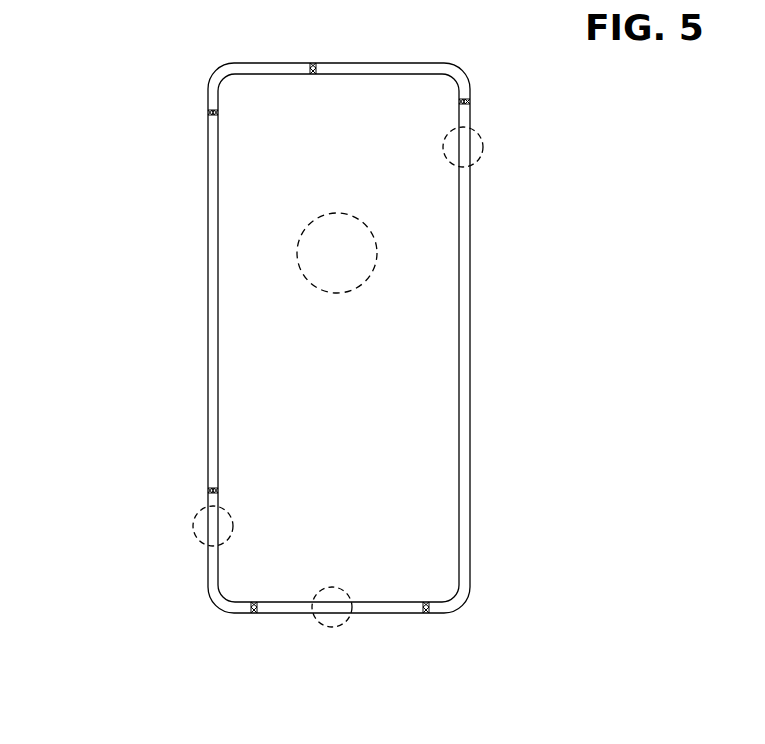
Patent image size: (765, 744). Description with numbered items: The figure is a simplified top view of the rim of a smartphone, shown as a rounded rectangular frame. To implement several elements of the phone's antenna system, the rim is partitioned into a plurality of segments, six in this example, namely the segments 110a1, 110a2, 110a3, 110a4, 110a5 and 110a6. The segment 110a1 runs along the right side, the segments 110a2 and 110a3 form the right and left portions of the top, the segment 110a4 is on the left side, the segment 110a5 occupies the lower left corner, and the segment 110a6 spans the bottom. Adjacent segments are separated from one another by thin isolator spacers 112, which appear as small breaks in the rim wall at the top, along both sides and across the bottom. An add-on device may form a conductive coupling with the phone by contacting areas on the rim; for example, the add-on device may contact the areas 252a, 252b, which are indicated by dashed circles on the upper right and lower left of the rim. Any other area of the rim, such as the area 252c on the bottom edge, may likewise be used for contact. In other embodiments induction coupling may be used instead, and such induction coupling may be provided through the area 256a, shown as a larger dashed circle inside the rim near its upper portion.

The rim segment 110a1 is at (471, 370).
The rim segment 110a2 is at (370, 60).
The rim segment 110a3 is at (264, 62).
The rim segment 110a4 is at (207, 340).
The rim segment 110a5 is at (207, 568).
The rim segment 110a6 is at (384, 617).
The isolator spacer 112 is at (457, 101).
The contact area 252a is at (478, 163).
The contact area 252b is at (190, 526).
The contact area 252c is at (322, 626).
The induction coupling area 256a is at (294, 252).